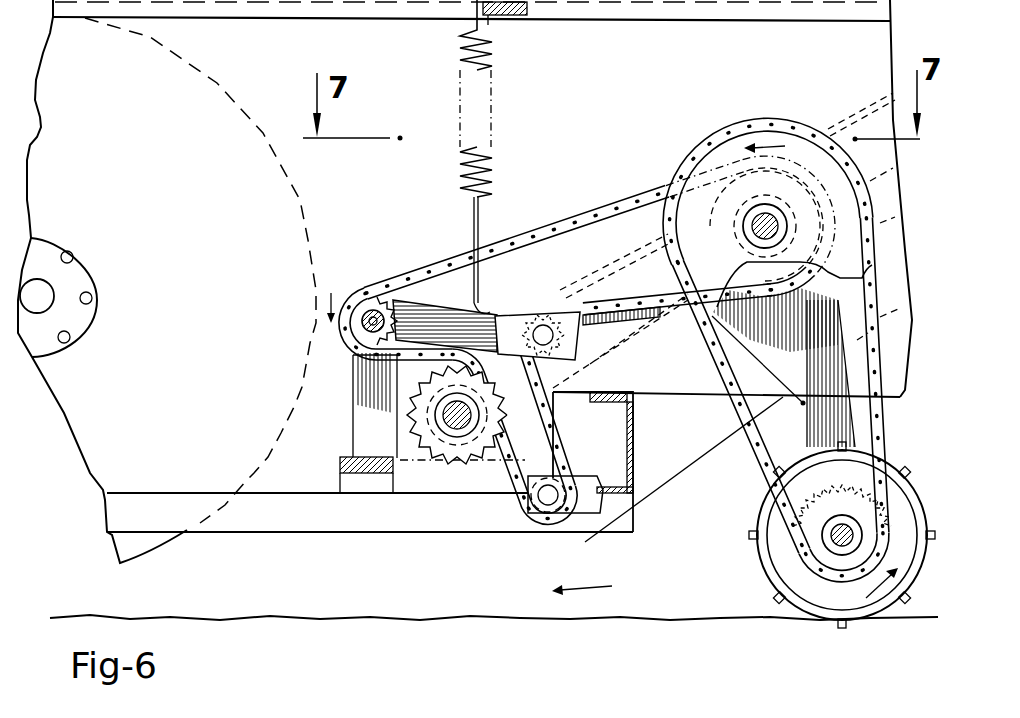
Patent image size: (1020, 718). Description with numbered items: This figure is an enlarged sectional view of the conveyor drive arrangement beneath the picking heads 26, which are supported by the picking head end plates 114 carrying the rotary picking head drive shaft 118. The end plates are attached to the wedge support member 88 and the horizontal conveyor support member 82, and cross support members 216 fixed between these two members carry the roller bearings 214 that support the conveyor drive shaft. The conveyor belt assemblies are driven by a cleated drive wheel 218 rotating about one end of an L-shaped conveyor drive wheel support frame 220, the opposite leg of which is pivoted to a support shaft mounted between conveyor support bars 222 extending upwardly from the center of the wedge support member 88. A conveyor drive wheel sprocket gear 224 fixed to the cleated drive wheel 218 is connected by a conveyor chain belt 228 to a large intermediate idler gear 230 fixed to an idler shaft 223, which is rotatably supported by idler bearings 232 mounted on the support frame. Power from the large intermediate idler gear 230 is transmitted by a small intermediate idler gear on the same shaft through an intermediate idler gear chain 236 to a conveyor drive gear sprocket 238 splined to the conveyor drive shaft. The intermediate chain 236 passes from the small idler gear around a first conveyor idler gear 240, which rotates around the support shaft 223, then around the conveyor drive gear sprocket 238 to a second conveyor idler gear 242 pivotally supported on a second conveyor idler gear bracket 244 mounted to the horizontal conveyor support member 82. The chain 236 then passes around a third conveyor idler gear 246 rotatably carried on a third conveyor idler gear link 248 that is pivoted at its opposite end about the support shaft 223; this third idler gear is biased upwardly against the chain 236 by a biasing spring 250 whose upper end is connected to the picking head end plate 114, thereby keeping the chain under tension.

The picking heads 26 is at (76, 547).
The horizontal conveyor support member 82 is at (636, 466).
The wedge support member 88 is at (336, 465).
The picking head end plates 114 is at (266, 64).
The rotary picking head drive shaft 118 is at (53, 291).
The roller bearings 214 is at (452, 430).
The cross support members 216 is at (487, 493).
The cleated drive wheel 218 is at (795, 573).
The conveyor drive wheel support frame 220 is at (813, 420).
The conveyor support bars 222 is at (360, 408).
The idler shaft 223 is at (362, 329).
The conveyor drive wheel sprocket gear 224 is at (868, 487).
The conveyor chain belt 228 is at (700, 343).
The large intermediate idler gear 230 is at (802, 146).
The idler bearings 232 is at (765, 212).
The intermediate idler gear chain 236 is at (562, 220).
The conveyor drive gear sprocket 238 is at (395, 396).
The first conveyor idler gear 240 is at (366, 290).
The second conveyor idler gear 242 is at (556, 466).
The second conveyor idler gear bracket 244 is at (596, 513).
The third conveyor idler gear 246 is at (581, 316).
The third conveyor idler gear link 248 is at (440, 305).
The biasing spring 250 is at (494, 58).